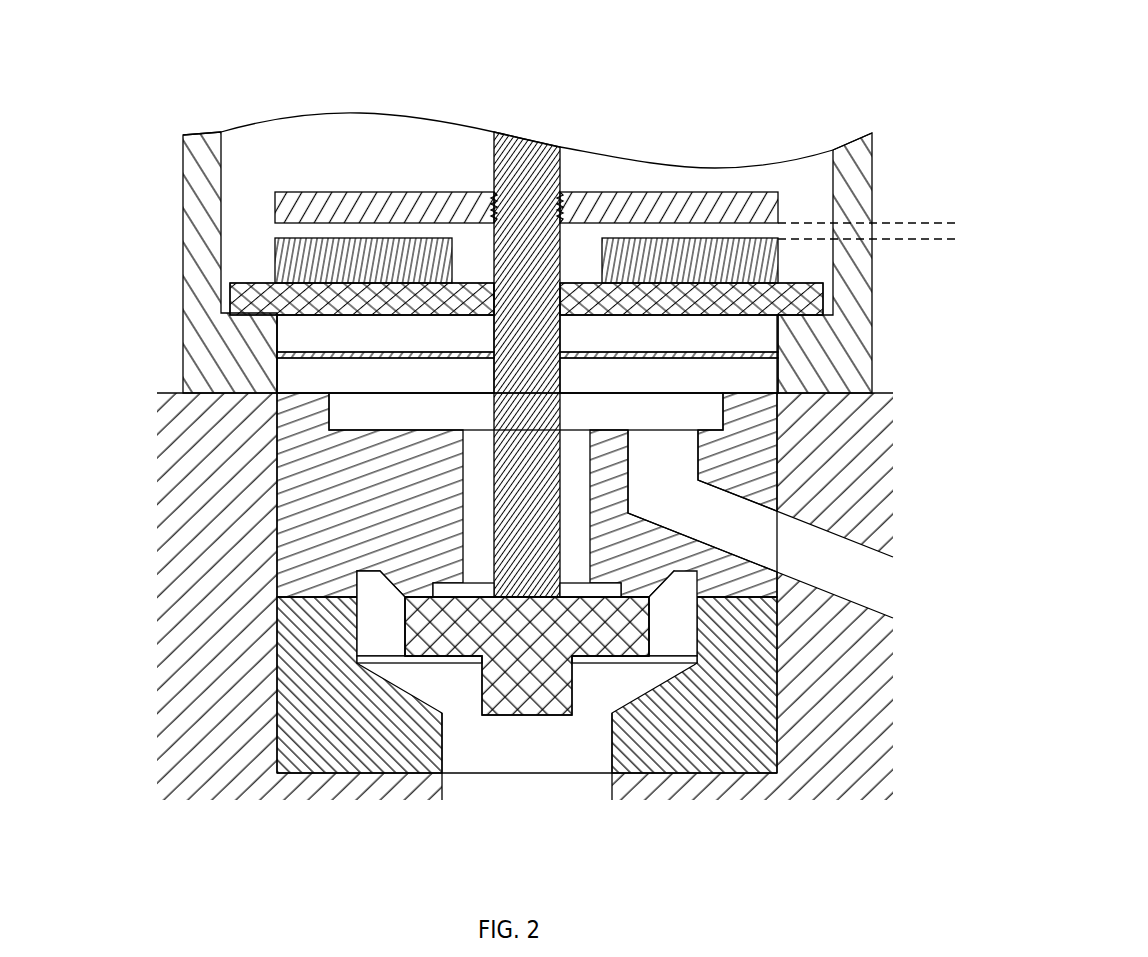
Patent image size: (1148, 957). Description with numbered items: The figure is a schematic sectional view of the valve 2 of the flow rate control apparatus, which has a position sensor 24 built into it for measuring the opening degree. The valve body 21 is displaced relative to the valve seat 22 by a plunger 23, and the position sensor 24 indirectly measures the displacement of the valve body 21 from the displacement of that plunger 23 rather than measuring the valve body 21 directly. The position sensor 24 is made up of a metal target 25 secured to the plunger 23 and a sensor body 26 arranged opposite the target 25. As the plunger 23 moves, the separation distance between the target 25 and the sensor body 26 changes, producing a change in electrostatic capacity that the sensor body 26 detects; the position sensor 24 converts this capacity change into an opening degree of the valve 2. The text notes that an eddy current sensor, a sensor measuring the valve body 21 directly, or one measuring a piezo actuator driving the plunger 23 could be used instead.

The valve 2 is at (695, 100).
The valve body 21 is at (529, 716).
The valve seat 22 is at (422, 600).
The plunger 23 is at (530, 136).
The position sensor 24 is at (431, 253).
The metal target 25 is at (275, 203).
The sensor body 26 is at (275, 263).